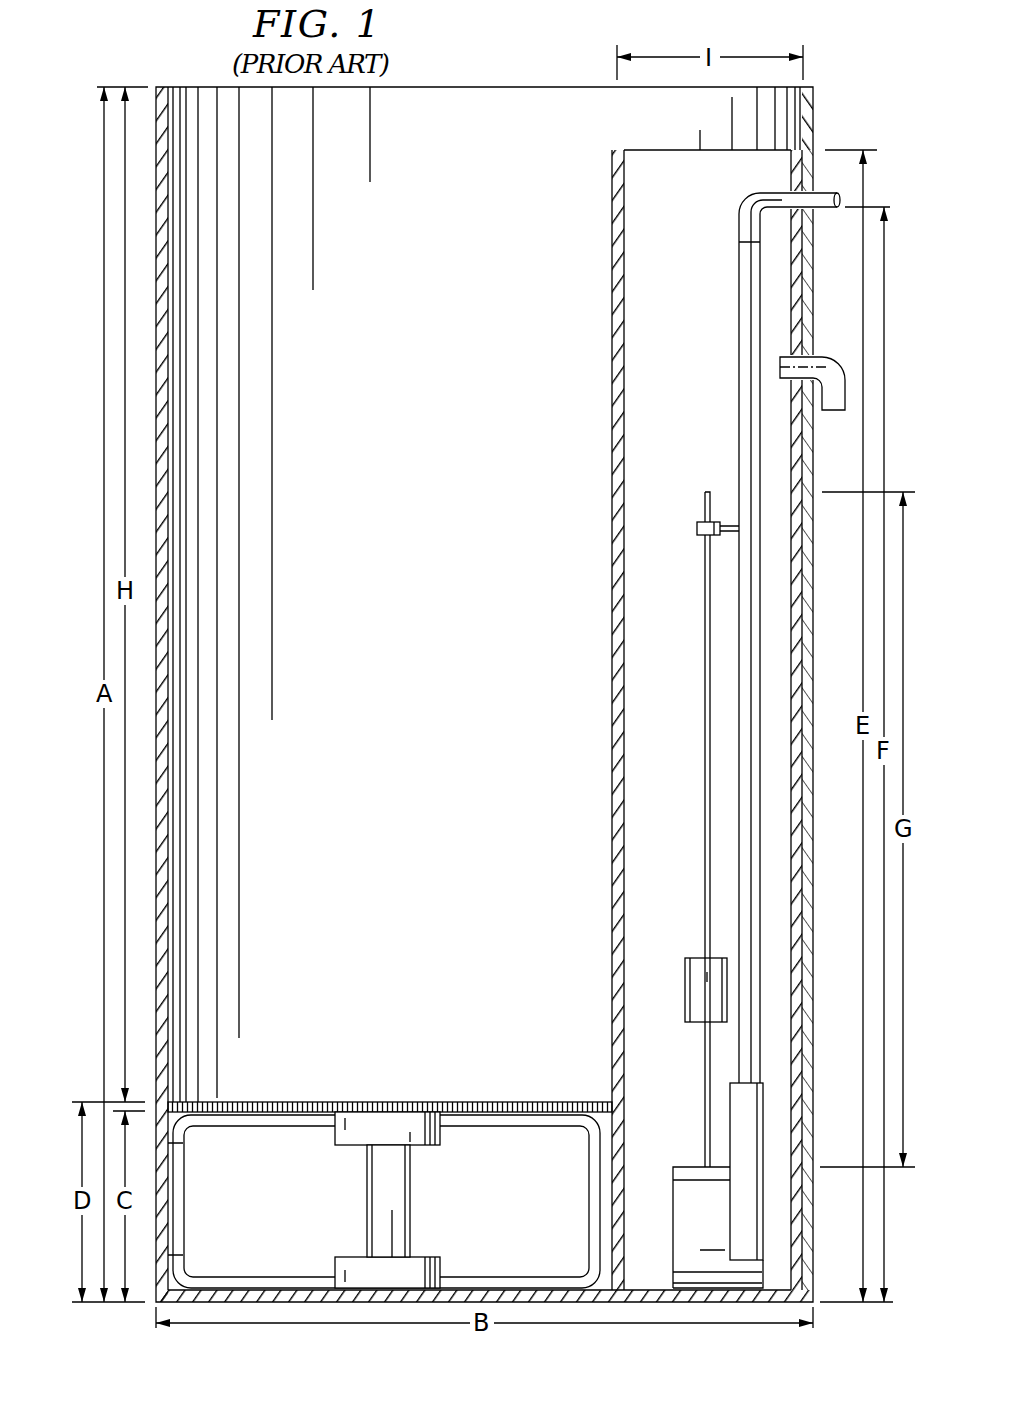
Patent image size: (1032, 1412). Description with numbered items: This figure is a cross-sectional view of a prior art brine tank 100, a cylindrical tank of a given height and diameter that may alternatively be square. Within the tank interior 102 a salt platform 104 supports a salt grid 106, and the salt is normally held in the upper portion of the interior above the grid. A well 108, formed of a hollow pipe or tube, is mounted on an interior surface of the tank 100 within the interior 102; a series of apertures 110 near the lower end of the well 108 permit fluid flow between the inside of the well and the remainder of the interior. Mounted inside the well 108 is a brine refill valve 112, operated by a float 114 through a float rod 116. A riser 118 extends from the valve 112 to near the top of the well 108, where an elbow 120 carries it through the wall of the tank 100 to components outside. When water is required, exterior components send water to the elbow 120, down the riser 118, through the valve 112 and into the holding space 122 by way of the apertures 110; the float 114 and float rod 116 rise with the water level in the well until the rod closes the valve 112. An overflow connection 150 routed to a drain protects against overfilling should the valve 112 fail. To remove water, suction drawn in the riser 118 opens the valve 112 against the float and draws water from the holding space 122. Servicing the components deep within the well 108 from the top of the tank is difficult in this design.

The brine tank 100 is at (845, 75).
The tank interior 102 is at (412, 523).
The salt platform 104 is at (413, 1204).
The salt grid 106 is at (390, 1102).
The well 108 is at (613, 575).
The apertures 110 is at (600, 1197).
The brine refill valve 112 is at (678, 1167).
The float 114 is at (685, 990).
The float rod 116 is at (704, 654).
The riser 118 is at (739, 367).
The elbow 120 is at (749, 199).
The holding space 122 is at (278, 1214).
The overflow connection 150 is at (837, 356).